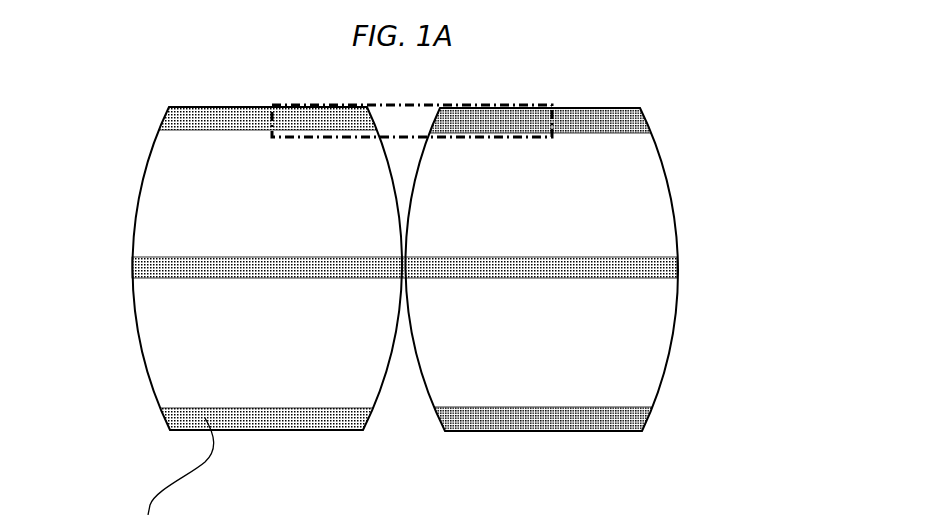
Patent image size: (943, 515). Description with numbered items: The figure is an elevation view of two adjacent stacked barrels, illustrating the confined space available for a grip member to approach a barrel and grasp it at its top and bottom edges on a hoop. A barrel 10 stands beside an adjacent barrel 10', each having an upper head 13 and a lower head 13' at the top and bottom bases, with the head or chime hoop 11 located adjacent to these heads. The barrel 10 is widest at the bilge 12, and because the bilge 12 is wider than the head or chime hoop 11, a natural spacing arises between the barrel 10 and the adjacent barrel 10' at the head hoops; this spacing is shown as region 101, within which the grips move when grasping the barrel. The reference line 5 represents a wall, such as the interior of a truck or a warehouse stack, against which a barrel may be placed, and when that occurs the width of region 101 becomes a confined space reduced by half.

The reference line 5 is at (522, 514).
The barrel 10 is at (268, 268).
The adjacent barrel 10' is at (541, 269).
The head or chime hoop 11 is at (192, 123).
The bilge 12 is at (668, 270).
The upper head 13 is at (254, 68).
The lower head 13' is at (400, 461).
The region 101 is at (422, 103).